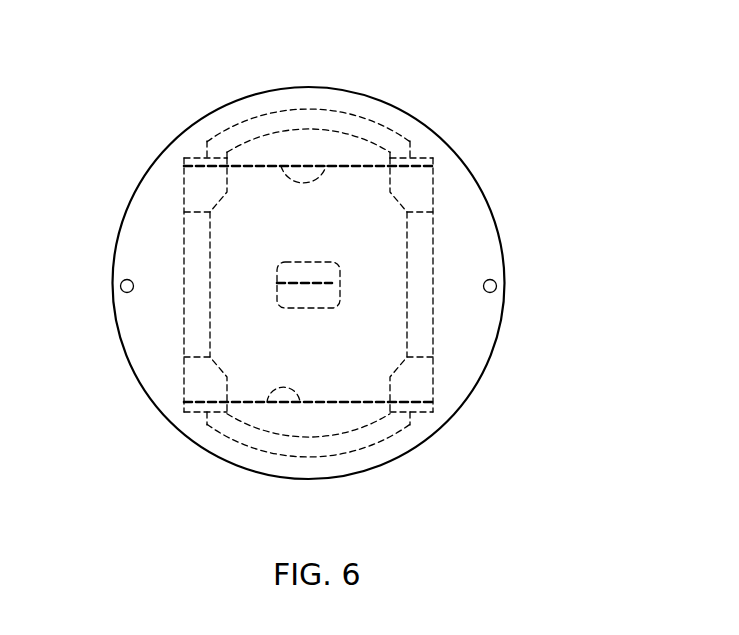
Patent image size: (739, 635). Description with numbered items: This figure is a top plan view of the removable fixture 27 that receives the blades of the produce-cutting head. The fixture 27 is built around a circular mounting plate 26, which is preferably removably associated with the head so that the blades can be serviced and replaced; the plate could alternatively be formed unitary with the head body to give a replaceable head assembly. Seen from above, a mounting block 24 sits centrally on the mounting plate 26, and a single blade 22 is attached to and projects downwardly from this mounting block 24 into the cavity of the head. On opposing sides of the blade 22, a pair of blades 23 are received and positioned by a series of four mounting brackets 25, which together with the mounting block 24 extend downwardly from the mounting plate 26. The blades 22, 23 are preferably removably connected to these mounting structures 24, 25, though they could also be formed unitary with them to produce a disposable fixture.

The blade 22 is at (330, 290).
The blades 23 is at (279, 166).
The mounting block 24 is at (277, 270).
The mounting brackets 25 is at (218, 195).
The mounting plate 26 is at (477, 243).
The removable fixture 27 is at (498, 104).